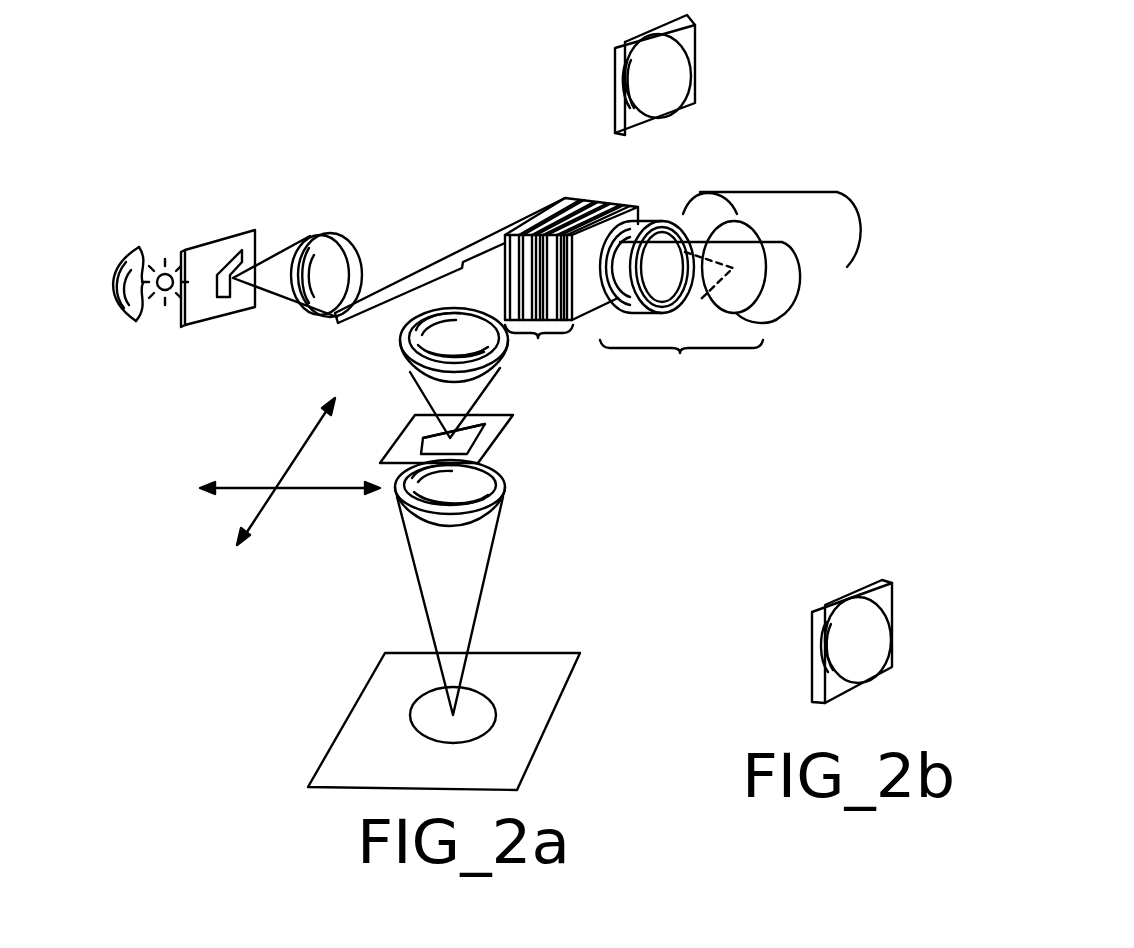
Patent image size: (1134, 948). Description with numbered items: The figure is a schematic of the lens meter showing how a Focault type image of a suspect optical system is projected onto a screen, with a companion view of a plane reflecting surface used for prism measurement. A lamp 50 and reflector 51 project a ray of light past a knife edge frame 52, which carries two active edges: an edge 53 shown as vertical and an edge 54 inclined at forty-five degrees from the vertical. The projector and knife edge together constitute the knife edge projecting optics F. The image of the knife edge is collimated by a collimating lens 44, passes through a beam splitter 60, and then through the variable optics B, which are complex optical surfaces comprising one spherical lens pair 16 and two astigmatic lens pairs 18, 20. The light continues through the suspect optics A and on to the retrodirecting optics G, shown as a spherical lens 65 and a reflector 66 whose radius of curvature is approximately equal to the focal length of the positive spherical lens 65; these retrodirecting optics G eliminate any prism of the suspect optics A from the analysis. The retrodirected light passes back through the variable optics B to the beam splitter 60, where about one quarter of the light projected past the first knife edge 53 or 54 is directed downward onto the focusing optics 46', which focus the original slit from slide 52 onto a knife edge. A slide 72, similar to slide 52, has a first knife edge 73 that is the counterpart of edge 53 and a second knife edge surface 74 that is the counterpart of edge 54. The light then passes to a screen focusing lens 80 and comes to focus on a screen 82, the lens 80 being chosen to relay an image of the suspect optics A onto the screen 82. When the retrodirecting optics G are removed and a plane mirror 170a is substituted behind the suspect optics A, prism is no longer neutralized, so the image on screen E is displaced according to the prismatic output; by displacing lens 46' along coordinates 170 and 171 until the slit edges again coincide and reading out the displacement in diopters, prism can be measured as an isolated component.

In FIG. 2a, the reflector 51 is at (128, 249).
In FIG. 2a, the lamp 50 is at (164, 258).
In FIG. 2a, the knife edge frame 52 is at (211, 241).
In FIG. 2a, the edge 53 is at (233, 293).
In FIG. 2a, the edge 54 is at (234, 278).
In FIG. 2a, the collimating lens 44 is at (335, 236).
In FIG. 2a, the beam splitter 60 is at (478, 230).
In FIG. 2a, the spherical lens pair 16 is at (517, 290).
In FIG. 2a, the astigmatic lens pair 18 is at (566, 199).
In FIG. 2a, the astigmatic lens pair 20 is at (606, 203).
In FIG. 2a, the spherical lens 65 is at (657, 287).
In FIG. 2a, the reflector 66 is at (782, 317).
In FIG. 2a, the plane mirror 170a is at (693, 33).
In FIG. 2b, the plane mirror 170a is at (893, 598).
In FIG. 2a, the focusing optics 46' is at (417, 373).
In FIG. 2a, the slide 72 is at (383, 461).
In FIG. 2a, the first knife edge 73 is at (427, 438).
In FIG. 2a, the second knife edge surface 74 is at (448, 436).
In FIG. 2a, the screen focusing lens 80 is at (520, 487).
In FIG. 2a, the screen 82 is at (383, 697).
In FIG. 2a, the coordinate 170 is at (297, 453).
In FIG. 2a, the coordinate 171 is at (310, 492).
In FIG. 2a, the suspect optics A is at (643, 127).
In FIG. 2b, the suspect optics A is at (838, 598).
In FIG. 2a, the variable optics B is at (539, 351).
In FIG. 2a, the screen E is at (327, 755).
In FIG. 2a, the knife edge projecting optics F is at (204, 340).
In FIG. 2a, the retrodirecting optics G is at (681, 364).